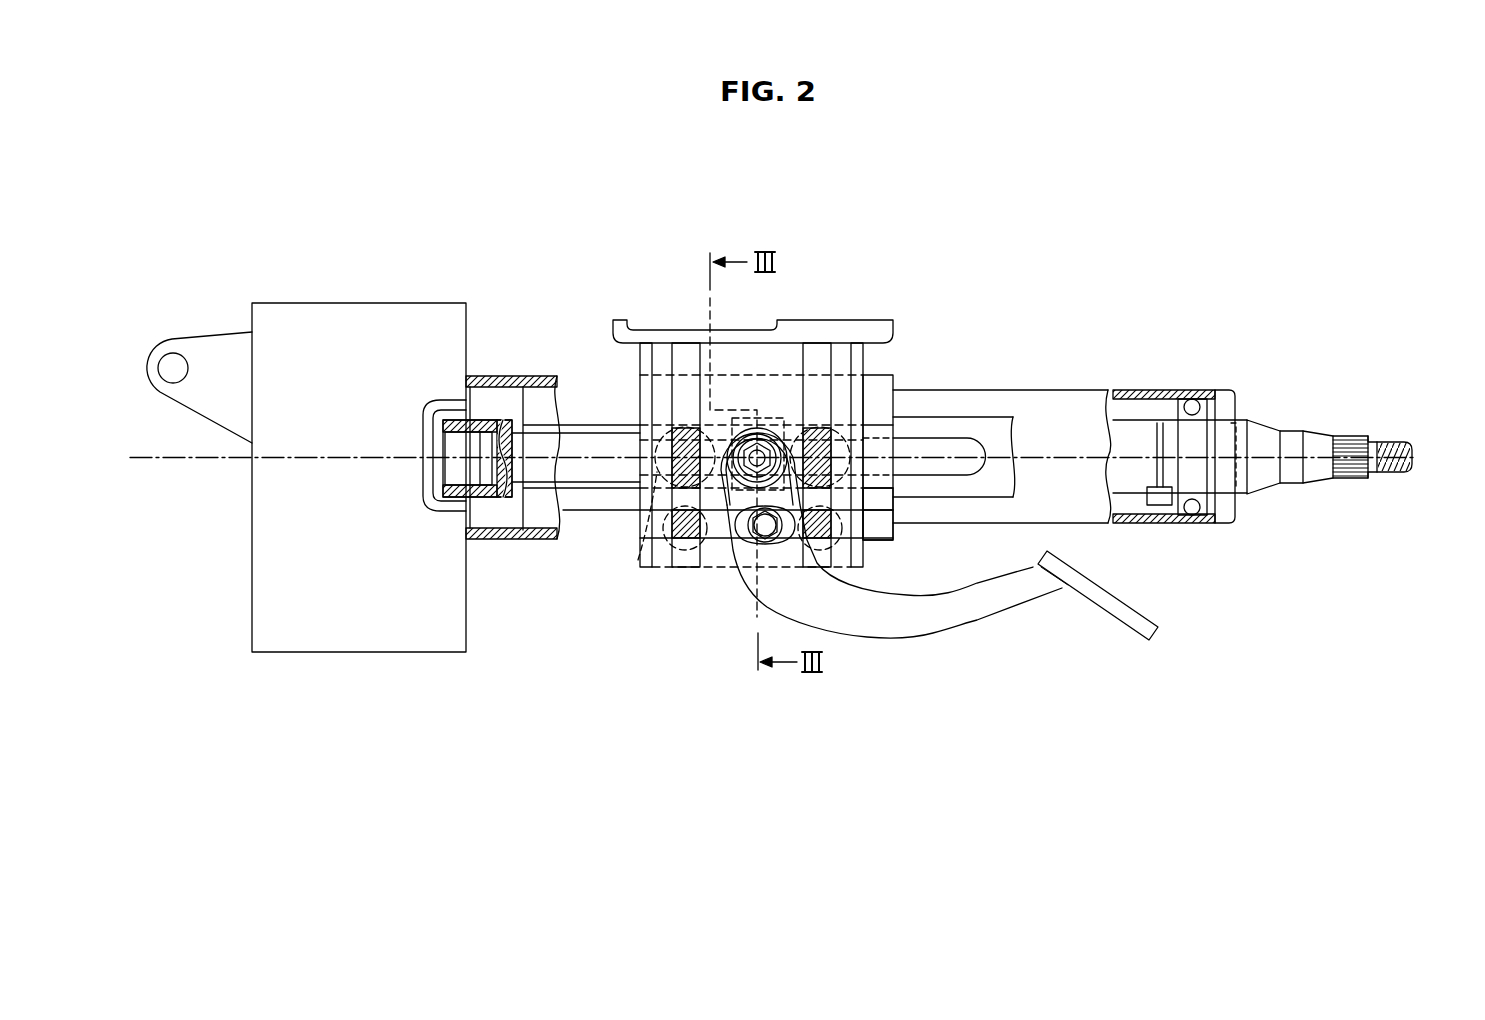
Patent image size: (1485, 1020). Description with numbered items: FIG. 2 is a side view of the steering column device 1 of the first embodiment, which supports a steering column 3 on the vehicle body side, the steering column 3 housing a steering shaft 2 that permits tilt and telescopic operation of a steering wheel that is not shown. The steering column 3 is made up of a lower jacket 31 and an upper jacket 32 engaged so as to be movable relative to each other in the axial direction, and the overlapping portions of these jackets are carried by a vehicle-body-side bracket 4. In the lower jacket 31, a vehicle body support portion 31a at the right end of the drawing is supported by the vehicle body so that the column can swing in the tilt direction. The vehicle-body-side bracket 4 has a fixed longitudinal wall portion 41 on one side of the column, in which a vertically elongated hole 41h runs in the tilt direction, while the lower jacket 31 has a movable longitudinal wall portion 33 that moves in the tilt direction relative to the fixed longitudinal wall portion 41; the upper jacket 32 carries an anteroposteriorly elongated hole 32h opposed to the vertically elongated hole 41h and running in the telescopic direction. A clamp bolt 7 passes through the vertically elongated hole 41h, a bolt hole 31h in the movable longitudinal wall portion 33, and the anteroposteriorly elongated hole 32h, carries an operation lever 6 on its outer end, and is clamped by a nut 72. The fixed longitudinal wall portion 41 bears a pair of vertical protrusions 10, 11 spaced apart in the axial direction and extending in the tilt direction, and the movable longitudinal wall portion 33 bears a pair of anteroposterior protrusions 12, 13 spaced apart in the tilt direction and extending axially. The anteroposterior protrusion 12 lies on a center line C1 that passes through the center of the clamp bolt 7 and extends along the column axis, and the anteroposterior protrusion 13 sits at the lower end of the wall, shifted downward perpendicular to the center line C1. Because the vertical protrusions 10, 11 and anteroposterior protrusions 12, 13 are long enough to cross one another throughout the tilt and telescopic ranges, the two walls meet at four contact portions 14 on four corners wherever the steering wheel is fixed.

The steering column device 1 is at (985, 192).
The steering shaft 2 is at (1330, 472).
The steering column 3 is at (987, 389).
The vehicle-body-side bracket 4 is at (760, 343).
The operation lever 6 is at (978, 608).
The clamp bolt 7 is at (748, 543).
The vertical protrusion 10 is at (687, 355).
The vertical protrusion 11 is at (828, 360).
The anteroposterior protrusion 12 is at (893, 418).
The anteroposterior protrusion 13 is at (883, 522).
The contact portion 14 is at (820, 427).
The lower jacket 31 is at (533, 384).
The vehicle body support portion 31a is at (174, 360).
The bolt hole 31h is at (660, 562).
The upper jacket 32 is at (1055, 400).
The anteroposteriorly elongated hole 32h is at (957, 472).
The movable longitudinal wall portion 33 is at (570, 490).
The fixed longitudinal wall portion 41 is at (645, 400).
The vertically elongated hole 41h is at (775, 420).
The nut 72 is at (757, 428).
The center line C1 is at (1093, 460).